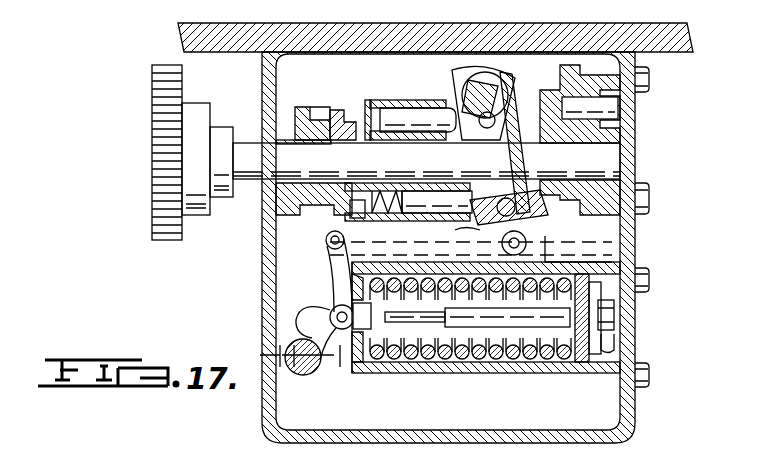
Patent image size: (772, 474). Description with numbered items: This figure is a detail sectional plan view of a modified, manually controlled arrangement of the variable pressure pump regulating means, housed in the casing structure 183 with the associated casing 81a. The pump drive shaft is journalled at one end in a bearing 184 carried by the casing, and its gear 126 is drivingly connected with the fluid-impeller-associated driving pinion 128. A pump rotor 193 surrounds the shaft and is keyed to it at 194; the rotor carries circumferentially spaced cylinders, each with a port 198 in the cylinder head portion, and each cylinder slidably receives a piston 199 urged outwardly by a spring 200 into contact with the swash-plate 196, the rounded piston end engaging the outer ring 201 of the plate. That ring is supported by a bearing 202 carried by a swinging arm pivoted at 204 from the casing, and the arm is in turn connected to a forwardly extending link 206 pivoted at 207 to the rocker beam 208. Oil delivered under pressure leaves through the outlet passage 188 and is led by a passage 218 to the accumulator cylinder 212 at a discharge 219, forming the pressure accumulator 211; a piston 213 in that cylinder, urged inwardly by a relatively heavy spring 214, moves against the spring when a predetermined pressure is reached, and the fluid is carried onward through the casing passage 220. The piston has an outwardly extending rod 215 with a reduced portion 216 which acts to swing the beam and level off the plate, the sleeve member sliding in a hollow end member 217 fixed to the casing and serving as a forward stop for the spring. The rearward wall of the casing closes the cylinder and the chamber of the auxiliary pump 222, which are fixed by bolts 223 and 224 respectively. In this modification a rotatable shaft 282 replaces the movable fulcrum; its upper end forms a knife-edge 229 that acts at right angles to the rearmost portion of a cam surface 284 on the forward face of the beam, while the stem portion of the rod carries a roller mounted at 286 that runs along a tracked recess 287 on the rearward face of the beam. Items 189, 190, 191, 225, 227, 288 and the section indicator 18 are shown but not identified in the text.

The casing 81a is at (215, 38).
The gear 126 is at (165, 149).
The driving pinion 128 is at (250, 190).
The casing structure 183 is at (632, 232).
The bearing 184 is at (540, 206).
The outlet passage 188 is at (286, 122).
The bushing 189 is at (305, 112).
The shaft 190 is at (316, 141).
The sleeve 191 is at (336, 141).
The pump rotor 193 is at (432, 100).
The keying 194 is at (428, 143).
The swash-plate 196 is at (512, 127).
The ports 198 is at (370, 100).
The piston 199 is at (412, 112).
The spring 200 is at (374, 202).
The outer ring 201 is at (462, 172).
The bearing 202 is at (505, 102).
The pivot 204 is at (492, 70).
The link 206 is at (446, 240).
The pivot 207 is at (328, 232).
The rocker beam 208 is at (326, 306).
The pressure accumulator 211 is at (614, 312).
The cylinder 212 is at (530, 355).
The piston 213 is at (612, 392).
The spring 214 is at (490, 312).
The rod 215 is at (556, 360).
The reduced portion 216 is at (448, 360).
The hollow end member 217 is at (388, 360).
The passage 218 is at (548, 247).
The discharge 219 is at (649, 277).
The casing passage 220 is at (614, 346).
The auxiliary pump 222 is at (620, 110).
The bolts 223 is at (649, 80).
The bolts 224 is at (649, 374).
The flange 225 is at (608, 150).
The bearing 227 is at (590, 108).
The knife-edge 229 is at (276, 324).
The section line 18 is at (300, 334).
The rotatable shaft 282 is at (298, 377).
The cam surface 284 is at (296, 326).
The roller mounting 286 is at (328, 250).
The tracked recess 287 is at (333, 377).
The arm 288 is at (300, 310).